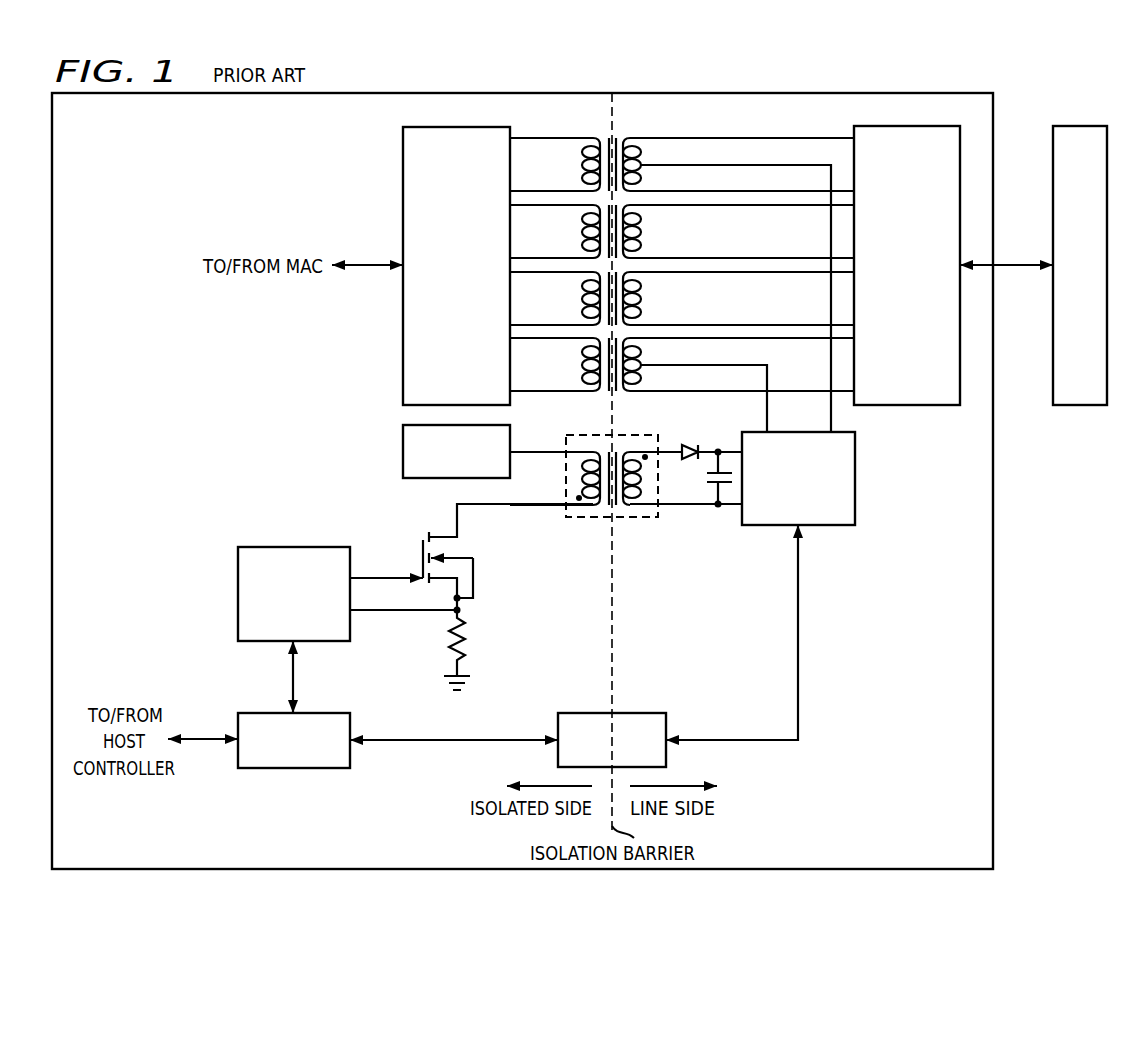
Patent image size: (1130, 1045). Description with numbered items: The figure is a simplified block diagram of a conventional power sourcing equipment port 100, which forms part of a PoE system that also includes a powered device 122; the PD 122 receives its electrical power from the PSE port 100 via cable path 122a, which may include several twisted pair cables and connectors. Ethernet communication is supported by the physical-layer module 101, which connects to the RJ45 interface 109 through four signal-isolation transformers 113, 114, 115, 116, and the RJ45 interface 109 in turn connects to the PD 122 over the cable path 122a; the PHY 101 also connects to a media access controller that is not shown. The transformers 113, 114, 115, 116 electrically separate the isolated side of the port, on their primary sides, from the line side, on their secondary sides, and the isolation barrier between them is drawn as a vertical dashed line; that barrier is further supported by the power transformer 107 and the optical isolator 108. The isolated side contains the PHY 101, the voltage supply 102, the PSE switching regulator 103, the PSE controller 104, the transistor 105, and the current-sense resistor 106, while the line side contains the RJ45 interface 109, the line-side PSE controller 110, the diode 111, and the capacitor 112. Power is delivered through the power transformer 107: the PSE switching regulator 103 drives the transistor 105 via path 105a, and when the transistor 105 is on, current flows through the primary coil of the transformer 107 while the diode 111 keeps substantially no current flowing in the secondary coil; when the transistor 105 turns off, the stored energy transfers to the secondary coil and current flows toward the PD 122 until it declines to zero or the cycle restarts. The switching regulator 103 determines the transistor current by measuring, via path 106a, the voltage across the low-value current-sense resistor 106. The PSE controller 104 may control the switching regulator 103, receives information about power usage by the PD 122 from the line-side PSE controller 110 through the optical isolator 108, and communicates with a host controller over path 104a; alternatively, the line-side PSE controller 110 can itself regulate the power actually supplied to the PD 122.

The power sourcing equipment (PSE) port 100 is at (995, 850).
The physical-layer module (PHY) 101 is at (457, 126).
The voltage supply 102 is at (402, 448).
The PSE switching regulator 103 is at (236, 594).
The PSE controller 104 is at (322, 712).
The path 104a is at (204, 738).
The transistor 105 is at (422, 556).
The path 105a is at (384, 576).
The current-sense resistor 106 is at (469, 630).
The path 106a is at (418, 613).
The power transformer 107 is at (630, 520).
The optical isolator 108 is at (640, 712).
The RJ45 interface 109 is at (914, 126).
The line-side PSE controller 110 is at (857, 481).
The diode 111 is at (690, 441).
The capacitor 112 is at (707, 478).
The signal-isolation transformer 113 is at (582, 161).
The signal-isolation transformer 114 is at (582, 228).
The signal-isolation transformer 115 is at (582, 295).
The signal-isolation transformer 116 is at (582, 362).
The powered device (PD) 122 is at (1066, 126).
The cable path 122a is at (1024, 262).